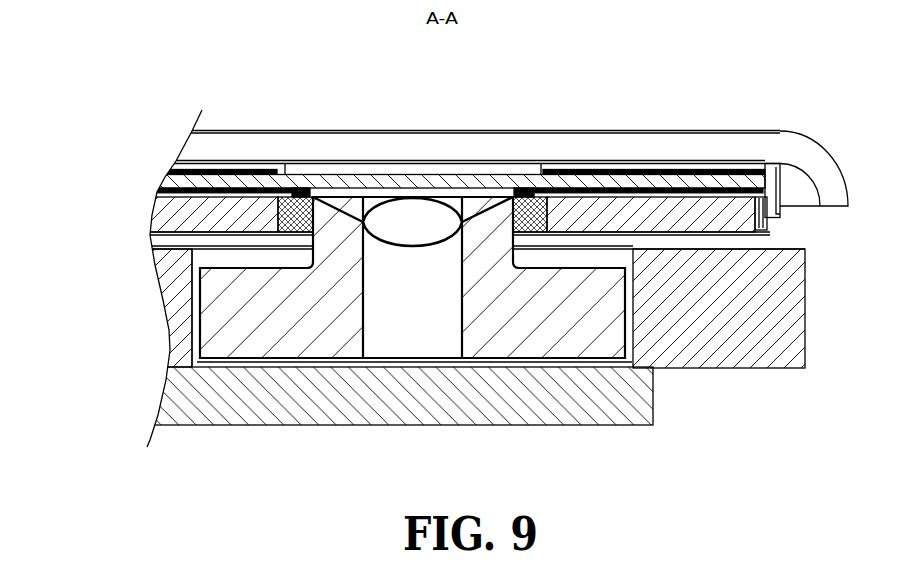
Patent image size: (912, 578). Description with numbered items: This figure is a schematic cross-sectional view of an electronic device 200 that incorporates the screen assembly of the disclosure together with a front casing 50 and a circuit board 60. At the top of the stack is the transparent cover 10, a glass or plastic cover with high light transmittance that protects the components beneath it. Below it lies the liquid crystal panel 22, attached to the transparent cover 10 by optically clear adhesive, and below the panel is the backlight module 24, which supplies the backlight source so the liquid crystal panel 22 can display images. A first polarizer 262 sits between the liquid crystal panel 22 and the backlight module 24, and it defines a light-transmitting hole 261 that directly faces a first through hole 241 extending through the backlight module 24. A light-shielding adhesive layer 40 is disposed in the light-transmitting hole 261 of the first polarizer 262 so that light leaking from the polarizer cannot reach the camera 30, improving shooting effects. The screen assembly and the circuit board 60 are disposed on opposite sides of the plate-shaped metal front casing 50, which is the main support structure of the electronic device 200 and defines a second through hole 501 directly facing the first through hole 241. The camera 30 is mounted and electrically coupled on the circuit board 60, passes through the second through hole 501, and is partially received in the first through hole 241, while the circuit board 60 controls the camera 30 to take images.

The transparent cover 10 is at (587, 142).
The liquid crystal panel 22 is at (765, 163).
The backlight module 24 is at (743, 208).
The camera 30 is at (508, 337).
The light-shielding adhesive layer 40 is at (302, 188).
The front casing 50 is at (690, 345).
The circuit board 60 is at (632, 402).
The electronic device 200 is at (89, 182).
The first through hole 241 is at (278, 175).
The light-transmitting hole 261 is at (462, 175).
The first polarizer 262 is at (693, 190).
The second through hole 501 is at (197, 333).